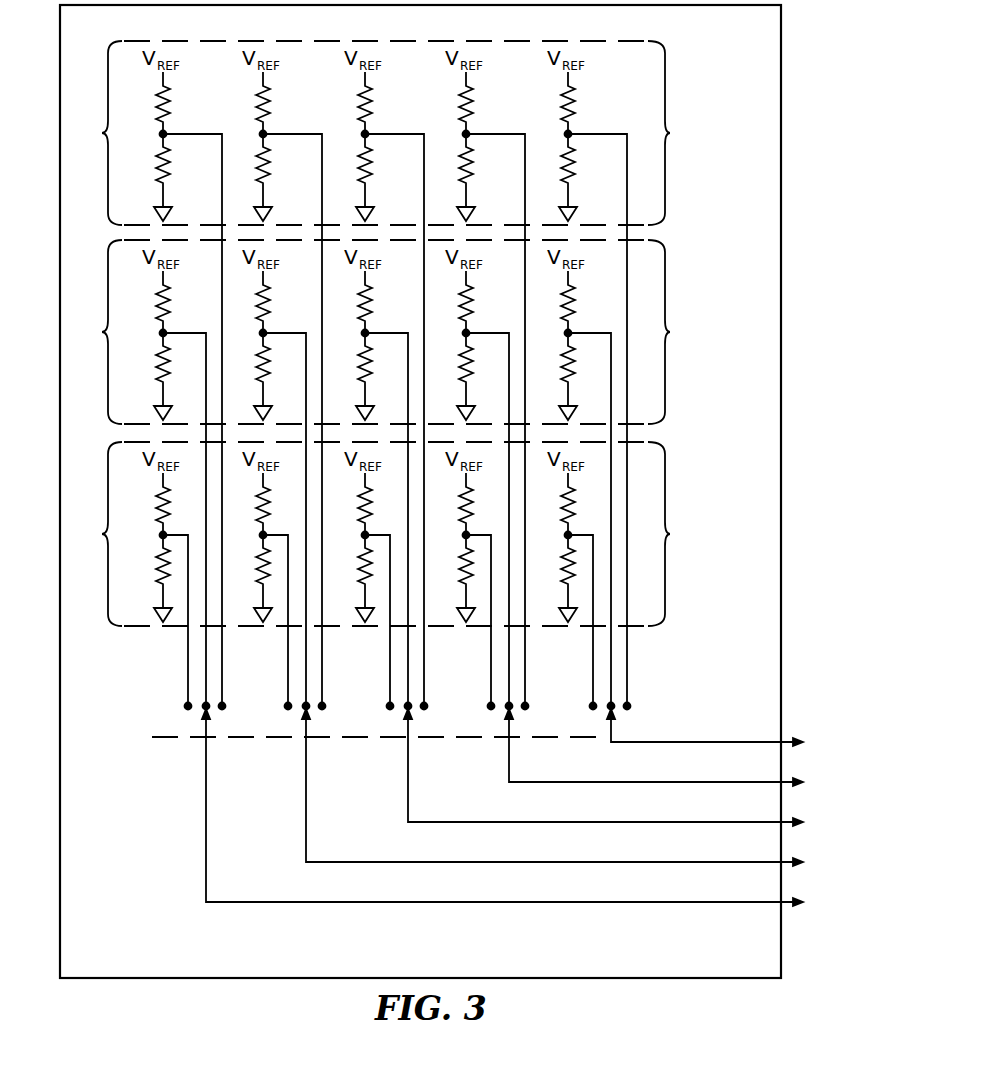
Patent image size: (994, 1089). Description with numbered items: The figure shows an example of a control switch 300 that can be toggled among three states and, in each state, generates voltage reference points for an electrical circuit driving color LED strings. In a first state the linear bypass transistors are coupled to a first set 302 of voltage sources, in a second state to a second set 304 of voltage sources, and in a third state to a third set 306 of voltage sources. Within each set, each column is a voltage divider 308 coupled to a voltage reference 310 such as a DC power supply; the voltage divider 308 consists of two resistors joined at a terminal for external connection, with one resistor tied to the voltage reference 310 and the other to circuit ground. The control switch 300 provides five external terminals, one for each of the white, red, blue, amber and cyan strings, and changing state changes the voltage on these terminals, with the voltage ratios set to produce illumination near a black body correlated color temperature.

The control switch 300 is at (410, 491).
The first set of voltage sources 302 is at (670, 133).
The second set of voltage sources 304 is at (396, 475).
The third set of voltage sources 306 is at (397, 562).
The voltage divider 308 is at (140, 506).
The voltage reference 310 is at (138, 253).